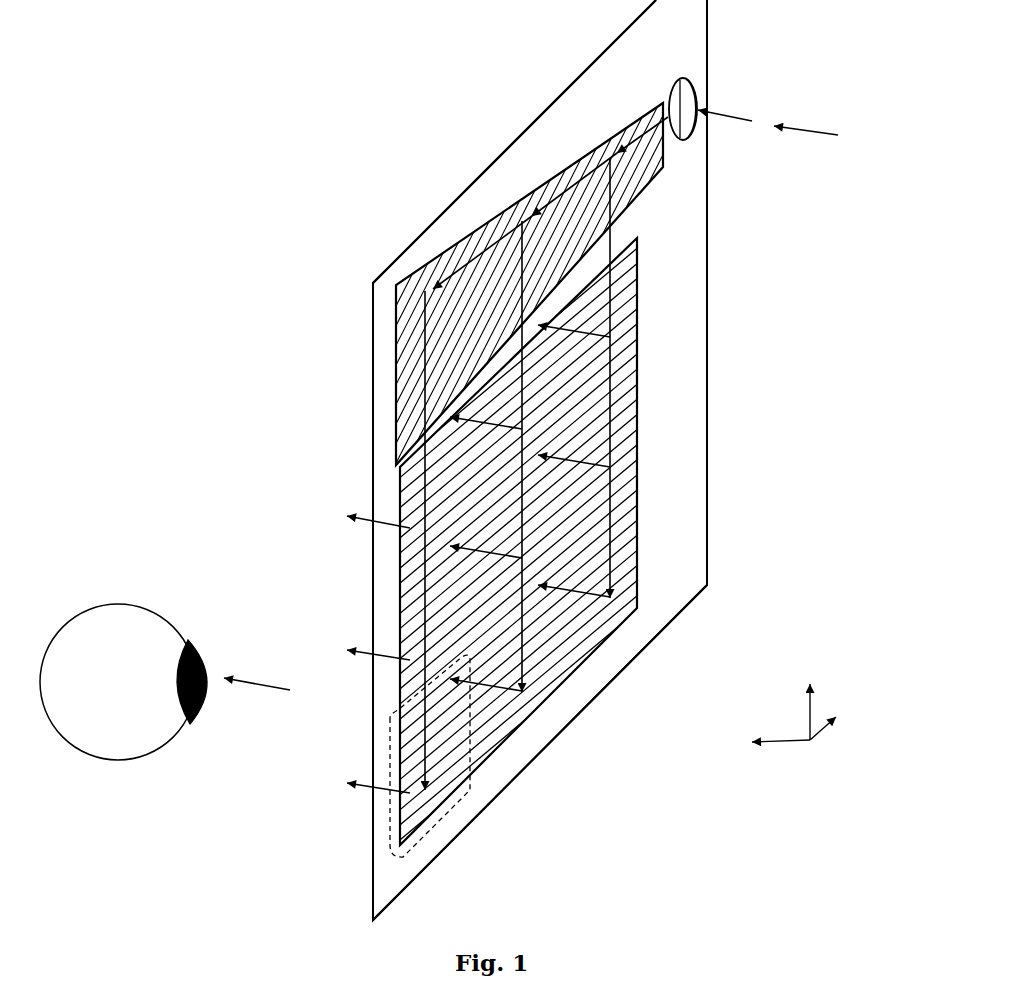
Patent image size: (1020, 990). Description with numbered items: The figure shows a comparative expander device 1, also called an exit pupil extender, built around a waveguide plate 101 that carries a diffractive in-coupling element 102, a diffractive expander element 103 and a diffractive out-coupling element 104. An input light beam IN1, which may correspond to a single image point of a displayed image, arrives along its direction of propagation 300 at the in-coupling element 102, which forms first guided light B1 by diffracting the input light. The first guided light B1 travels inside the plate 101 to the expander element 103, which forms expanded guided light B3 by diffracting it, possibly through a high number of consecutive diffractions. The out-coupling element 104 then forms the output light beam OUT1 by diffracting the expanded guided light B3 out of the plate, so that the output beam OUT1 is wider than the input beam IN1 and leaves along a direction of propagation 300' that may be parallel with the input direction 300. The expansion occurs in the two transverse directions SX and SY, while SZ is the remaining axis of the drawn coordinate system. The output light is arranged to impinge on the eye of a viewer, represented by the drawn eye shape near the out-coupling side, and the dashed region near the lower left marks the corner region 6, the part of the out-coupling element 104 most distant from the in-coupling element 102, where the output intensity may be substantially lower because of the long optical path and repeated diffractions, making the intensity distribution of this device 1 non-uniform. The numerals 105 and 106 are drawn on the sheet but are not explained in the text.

The expander device 1 is at (453, 122).
The waveguide plate 101 is at (562, 92).
The diffractive in-coupling element 102 is at (682, 79).
The diffractive expander element 103 is at (463, 236).
The diffractive out-coupling element 104 is at (397, 487).
The eye of viewer 105 is at (123, 600).
The expander grating region 106 is at (561, 585).
The direction of propagation of the input light beam 300 is at (806, 162).
The direction of propagation of the output light beam 300' is at (257, 712).
The corner region 6 is at (390, 815).
The first guided light B1 is at (641, 121).
The expanded guided light B3 is at (420, 381).
The input light beam IN1 is at (727, 110).
The output light beam OUT1 is at (320, 498).
The direction SX is at (841, 722).
The direction SY is at (815, 700).
The direction SZ is at (762, 749).